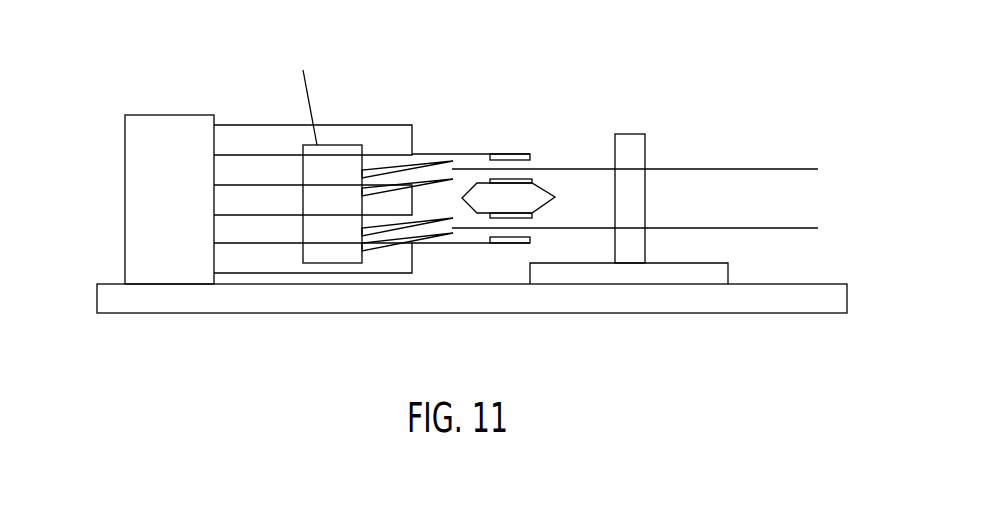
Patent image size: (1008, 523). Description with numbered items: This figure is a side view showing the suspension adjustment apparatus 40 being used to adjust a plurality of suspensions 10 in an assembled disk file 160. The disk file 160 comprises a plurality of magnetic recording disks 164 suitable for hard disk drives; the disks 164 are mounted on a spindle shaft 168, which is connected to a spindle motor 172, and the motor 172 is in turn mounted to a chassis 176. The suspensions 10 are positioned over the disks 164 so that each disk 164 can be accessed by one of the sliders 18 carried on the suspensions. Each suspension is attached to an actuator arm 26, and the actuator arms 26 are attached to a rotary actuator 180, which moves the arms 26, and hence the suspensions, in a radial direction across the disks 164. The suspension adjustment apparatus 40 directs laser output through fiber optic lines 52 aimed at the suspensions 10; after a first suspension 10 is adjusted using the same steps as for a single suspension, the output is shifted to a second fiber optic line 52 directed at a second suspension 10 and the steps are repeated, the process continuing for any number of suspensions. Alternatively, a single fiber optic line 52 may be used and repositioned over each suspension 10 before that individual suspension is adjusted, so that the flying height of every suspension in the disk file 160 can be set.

The suspension 10 is at (473, 152).
The slider 18 is at (532, 157).
The actuator arm 26 is at (222, 140).
The suspension adjustment apparatus 40 is at (355, 145).
The fiber optic line 52 is at (360, 192).
The disk file 160 is at (210, 324).
The magnetic recording disk 164 is at (783, 170).
The spindle shaft 168 is at (643, 143).
The spindle motor 172 is at (565, 272).
The chassis 176 is at (823, 300).
The rotary actuator 180 is at (145, 263).